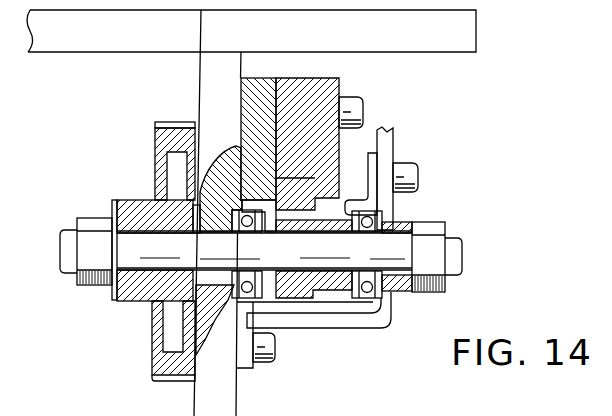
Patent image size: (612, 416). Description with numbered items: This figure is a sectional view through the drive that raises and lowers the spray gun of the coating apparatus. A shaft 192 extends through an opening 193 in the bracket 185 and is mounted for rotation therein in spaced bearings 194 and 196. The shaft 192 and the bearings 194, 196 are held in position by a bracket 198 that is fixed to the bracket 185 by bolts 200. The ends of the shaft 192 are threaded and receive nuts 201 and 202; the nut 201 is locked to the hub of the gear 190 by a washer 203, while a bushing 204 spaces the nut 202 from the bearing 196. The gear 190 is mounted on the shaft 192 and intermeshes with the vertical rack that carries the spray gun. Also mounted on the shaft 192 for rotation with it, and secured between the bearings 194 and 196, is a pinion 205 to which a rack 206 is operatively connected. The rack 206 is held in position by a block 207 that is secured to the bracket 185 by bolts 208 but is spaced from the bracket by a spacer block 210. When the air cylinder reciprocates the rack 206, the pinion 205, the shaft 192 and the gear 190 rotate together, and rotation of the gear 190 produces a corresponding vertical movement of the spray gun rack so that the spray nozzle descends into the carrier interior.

The bracket 185 is at (210, 407).
The gear 190 is at (165, 144).
The shaft 192 is at (165, 246).
The opening 193 is at (213, 205).
The bearing 194 is at (214, 218).
The bearing 196 is at (380, 215).
The bracket 198 is at (386, 150).
The bolts 200 is at (265, 347).
The nut 201 is at (90, 210).
The nut 202 is at (438, 230).
The washer 203 is at (110, 293).
The bushing 204 is at (398, 286).
The pinion 205 is at (312, 288).
The rack 206 is at (339, 147).
The block 207 is at (320, 92).
The bolts 208 is at (352, 102).
The spacer block 210 is at (262, 86).